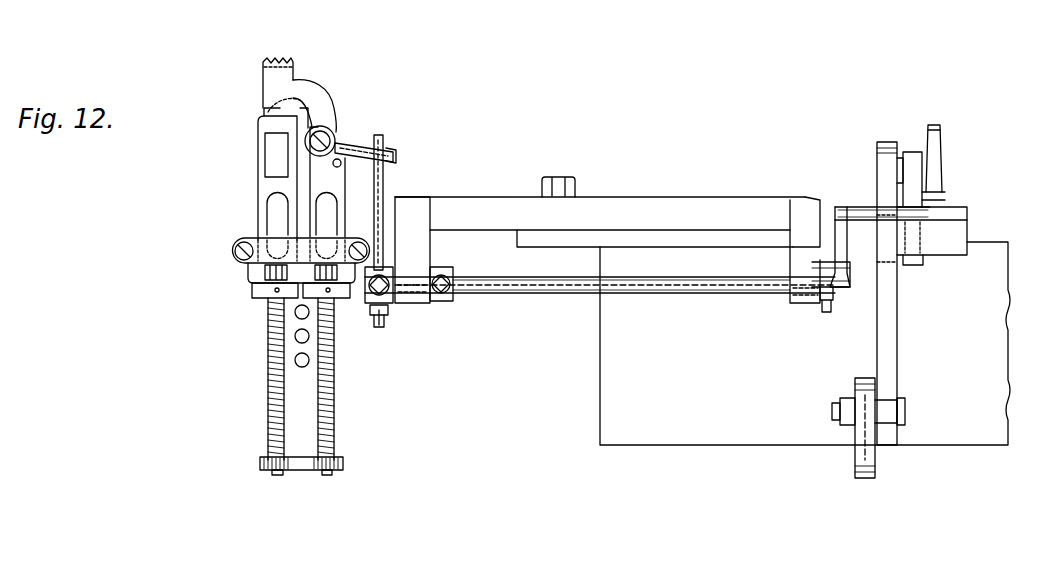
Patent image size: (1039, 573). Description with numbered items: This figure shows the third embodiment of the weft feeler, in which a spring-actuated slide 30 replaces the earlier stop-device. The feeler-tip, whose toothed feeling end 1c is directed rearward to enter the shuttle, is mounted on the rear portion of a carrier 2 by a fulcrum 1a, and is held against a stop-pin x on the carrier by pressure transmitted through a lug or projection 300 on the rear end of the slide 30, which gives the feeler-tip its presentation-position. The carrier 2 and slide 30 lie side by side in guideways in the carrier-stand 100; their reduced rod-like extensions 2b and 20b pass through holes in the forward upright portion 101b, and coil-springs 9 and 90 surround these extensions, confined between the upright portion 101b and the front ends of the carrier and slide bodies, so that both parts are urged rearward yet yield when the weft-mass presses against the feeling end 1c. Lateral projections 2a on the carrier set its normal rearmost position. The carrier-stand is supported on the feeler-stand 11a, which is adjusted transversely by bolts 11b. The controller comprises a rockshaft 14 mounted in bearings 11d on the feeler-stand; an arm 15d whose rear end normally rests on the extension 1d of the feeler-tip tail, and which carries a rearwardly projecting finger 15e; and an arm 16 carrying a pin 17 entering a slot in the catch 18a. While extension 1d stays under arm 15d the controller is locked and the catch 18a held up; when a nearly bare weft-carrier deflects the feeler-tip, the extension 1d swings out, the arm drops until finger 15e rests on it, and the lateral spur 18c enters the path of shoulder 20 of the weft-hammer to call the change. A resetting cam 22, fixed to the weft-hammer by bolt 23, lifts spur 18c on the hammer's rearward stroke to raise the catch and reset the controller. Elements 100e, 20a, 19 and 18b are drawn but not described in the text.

The feeling end 1c is at (276, 58).
The coil-spring 9 is at (318, 95).
The spring-actuated slide 30 is at (258, 174).
The lug or projection 300 is at (262, 124).
The carrier 2 is at (338, 188).
The fulcrum (pivot) 1a is at (334, 128).
The stop-pin x is at (342, 166).
The finger 15e is at (376, 133).
The extension 1d is at (397, 156).
The arm 15d is at (386, 196).
The cross bar 100e is at (248, 243).
The carrier-stand 100 is at (248, 275).
The guide block 20a is at (258, 293).
The actuating spring 90 is at (267, 360).
The forward upright portion 101b is at (344, 463).
The rod-like extension 20b is at (272, 473).
The rod-like extension 2b is at (332, 473).
The lateral projections 2a is at (362, 298).
The feeler-stand 11a is at (652, 197).
The bolts 11b is at (554, 176).
The bearings 11d is at (416, 305).
The rockshaft 14 is at (498, 296).
The inwardly-projecting pin 17 is at (860, 205).
The arm 16 is at (848, 262).
The catch 18a is at (898, 314).
The gear 19 is at (854, 466).
The bolt 18b is at (832, 412).
The lateral spur 18c is at (967, 212).
The resetting cam 22 is at (914, 265).
The shoulder 20 is at (930, 190).
The bolt 23 is at (900, 158).